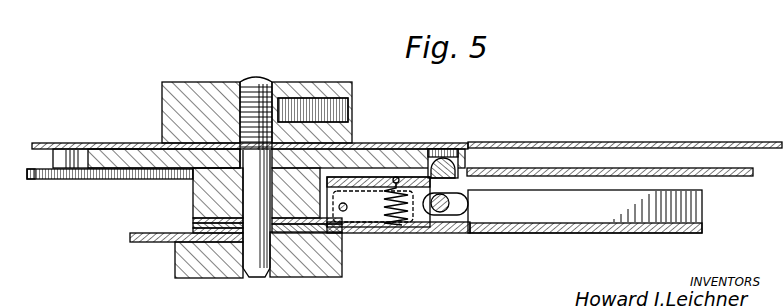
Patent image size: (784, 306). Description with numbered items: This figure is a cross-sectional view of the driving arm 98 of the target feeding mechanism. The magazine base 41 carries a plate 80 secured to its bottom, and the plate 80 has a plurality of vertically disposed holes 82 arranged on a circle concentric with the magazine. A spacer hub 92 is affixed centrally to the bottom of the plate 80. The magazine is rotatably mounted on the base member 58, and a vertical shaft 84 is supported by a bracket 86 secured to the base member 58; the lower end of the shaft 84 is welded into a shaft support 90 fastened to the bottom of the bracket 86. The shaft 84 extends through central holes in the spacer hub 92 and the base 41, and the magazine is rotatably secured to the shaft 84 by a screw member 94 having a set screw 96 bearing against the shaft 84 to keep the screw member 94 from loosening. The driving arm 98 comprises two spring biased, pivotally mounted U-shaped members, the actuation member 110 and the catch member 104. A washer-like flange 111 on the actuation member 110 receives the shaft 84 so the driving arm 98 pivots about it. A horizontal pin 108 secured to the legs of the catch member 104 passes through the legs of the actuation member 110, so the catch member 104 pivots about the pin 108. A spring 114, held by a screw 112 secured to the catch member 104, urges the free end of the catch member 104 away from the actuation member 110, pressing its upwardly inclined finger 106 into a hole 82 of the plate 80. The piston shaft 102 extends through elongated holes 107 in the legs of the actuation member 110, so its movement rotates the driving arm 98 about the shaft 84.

The base 41 is at (588, 142).
The base member 58 is at (729, 176).
The plate 80 is at (409, 153).
The holes 82 is at (82, 143).
The shaft 84 is at (197, 214).
The bracket 86 is at (137, 243).
The shaft support 90 is at (300, 268).
The spacer hub 92 is at (197, 186).
The screw member 94 is at (184, 97).
The set screw 96 is at (284, 116).
The driving arm 98 is at (578, 231).
The piston shaft 102 is at (449, 212).
The catch member 104 is at (360, 207).
The finger 106 is at (442, 158).
The elongated holes 107 is at (466, 213).
The pin 108 is at (345, 212).
The actuation member 110 is at (538, 232).
The flange 111 is at (217, 232).
The screw 112 is at (395, 177).
The spring 114 is at (412, 226).